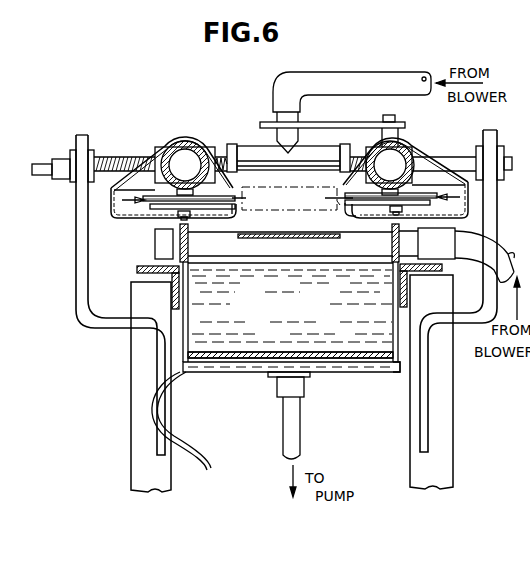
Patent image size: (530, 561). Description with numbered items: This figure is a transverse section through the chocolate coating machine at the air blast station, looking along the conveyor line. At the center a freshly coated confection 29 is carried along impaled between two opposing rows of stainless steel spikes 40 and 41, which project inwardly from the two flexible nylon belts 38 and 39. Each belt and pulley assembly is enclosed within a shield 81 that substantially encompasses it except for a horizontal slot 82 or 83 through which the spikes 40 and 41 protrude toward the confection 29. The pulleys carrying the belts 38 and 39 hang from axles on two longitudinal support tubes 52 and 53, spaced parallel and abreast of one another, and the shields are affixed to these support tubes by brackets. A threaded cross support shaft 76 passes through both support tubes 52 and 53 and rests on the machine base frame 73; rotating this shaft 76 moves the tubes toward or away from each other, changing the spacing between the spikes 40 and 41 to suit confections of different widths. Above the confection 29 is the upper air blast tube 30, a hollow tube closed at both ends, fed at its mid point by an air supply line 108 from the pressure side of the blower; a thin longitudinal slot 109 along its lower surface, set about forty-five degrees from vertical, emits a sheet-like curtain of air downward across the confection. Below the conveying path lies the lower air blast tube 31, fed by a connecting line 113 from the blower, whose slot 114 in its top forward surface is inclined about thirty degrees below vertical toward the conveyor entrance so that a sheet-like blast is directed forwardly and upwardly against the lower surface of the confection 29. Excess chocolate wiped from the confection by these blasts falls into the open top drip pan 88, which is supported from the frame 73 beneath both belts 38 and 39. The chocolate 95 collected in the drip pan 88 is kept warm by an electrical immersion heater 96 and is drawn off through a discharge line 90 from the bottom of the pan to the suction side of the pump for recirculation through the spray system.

The confection 29 is at (286, 208).
The upper air blast tube 30 is at (258, 153).
The lower air blast tube 31 is at (228, 253).
The belt 38 is at (431, 199).
The belt 39 is at (145, 203).
The spikes 40 is at (328, 200).
The spikes 41 is at (246, 200).
The support tube 52 is at (398, 190).
The support tube 53 is at (160, 178).
The base frame 73 is at (142, 290).
The cross support shaft 76 is at (131, 157).
The shield 81 is at (189, 146).
The horizontal slot 82 is at (337, 200).
The horizontal slot 83 is at (243, 218).
The drip pan 88 is at (390, 368).
The discharge line 90 is at (297, 388).
The chocolate 95 is at (291, 317).
The electrical immersion heater 96 is at (175, 375).
The air supply line 108 is at (277, 117).
The longitudinal slot 109 is at (306, 160).
The connecting line 113 is at (501, 247).
The longitudinal slot 114 is at (352, 215).